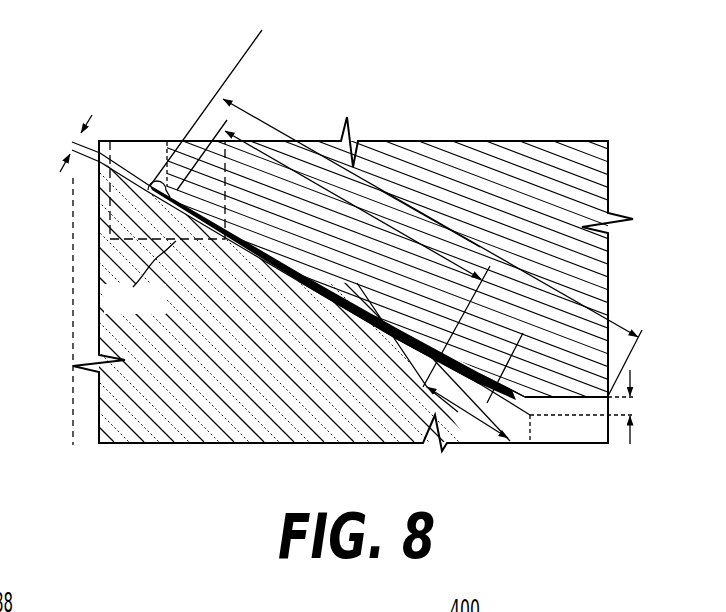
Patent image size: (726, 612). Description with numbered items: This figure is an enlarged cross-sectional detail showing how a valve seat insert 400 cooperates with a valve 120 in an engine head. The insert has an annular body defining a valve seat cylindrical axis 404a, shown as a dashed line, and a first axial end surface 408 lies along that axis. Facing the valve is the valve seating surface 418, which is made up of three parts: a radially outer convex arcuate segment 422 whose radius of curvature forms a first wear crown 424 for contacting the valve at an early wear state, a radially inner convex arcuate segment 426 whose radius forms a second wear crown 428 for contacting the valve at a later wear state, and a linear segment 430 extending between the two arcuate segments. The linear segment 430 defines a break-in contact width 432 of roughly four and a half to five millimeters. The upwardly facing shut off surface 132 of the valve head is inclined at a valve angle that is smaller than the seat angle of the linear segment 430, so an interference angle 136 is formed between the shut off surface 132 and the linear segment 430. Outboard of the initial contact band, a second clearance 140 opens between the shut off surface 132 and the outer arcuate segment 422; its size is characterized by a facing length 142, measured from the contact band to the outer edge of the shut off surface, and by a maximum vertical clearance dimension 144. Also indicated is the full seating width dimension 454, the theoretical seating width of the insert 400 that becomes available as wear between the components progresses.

The valve seat insert 400 is at (542, 135).
The valve 120 is at (336, 430).
The shut off surface 132 is at (391, 334).
The interference angle 136 is at (64, 164).
The second clearance 140 is at (540, 402).
The facing length 142 is at (478, 402).
The maximum vertical clearance dimension 144 is at (630, 432).
The valve seat cylindrical axis 404a is at (72, 345).
The first axial end surface 408 is at (7, 273).
The valve seating surface 418 is at (321, 273).
The radially outer convex arcuate segment 422 is at (514, 383).
The first wear crown 424 is at (504, 352).
The radially inner convex arcuate segment 426 is at (167, 186).
The second wear crown 428 is at (262, 118).
The linear segment 430 is at (358, 318).
The break-in contact width 432 is at (279, 166).
The full seating width dimension 454 is at (432, 220).